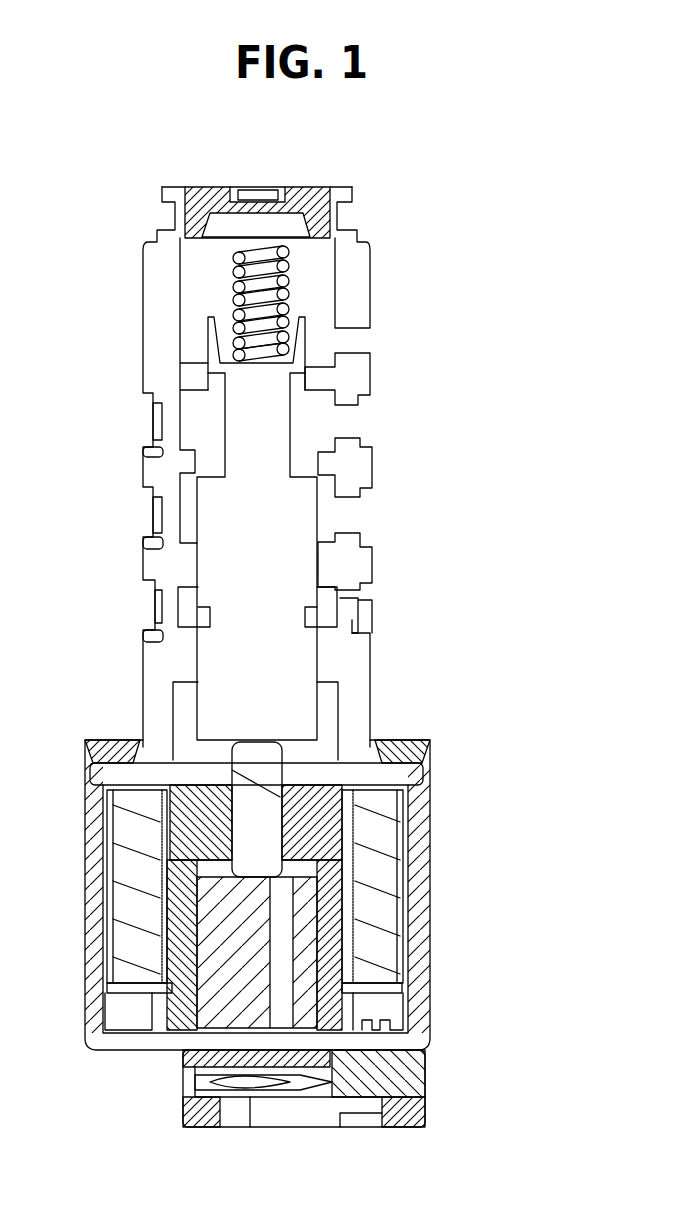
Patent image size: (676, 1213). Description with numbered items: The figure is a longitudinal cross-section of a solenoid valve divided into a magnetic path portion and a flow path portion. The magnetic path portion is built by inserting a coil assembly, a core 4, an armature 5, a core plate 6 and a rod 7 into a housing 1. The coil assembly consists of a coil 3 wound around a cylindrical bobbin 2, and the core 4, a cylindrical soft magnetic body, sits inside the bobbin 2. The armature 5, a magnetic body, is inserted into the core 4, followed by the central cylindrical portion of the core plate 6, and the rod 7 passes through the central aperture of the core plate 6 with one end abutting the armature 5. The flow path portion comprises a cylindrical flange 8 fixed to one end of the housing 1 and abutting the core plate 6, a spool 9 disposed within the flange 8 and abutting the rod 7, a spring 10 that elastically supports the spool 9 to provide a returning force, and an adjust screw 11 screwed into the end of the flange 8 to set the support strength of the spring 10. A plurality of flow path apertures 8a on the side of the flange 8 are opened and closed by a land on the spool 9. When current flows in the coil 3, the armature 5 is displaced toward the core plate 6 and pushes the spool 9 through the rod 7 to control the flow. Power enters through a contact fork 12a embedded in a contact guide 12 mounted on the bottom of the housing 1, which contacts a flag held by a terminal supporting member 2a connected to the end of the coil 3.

The housing 1 is at (418, 832).
The bobbin 2 is at (357, 907).
The terminal supporting member 2a is at (385, 1007).
The coil 3 is at (375, 945).
The core 4 is at (173, 910).
The armature 5 is at (227, 942).
The core plate 6 is at (218, 827).
The rod 7 is at (247, 765).
The flange 8 is at (165, 332).
The flow path apertures 8a is at (348, 342).
The spool 9 is at (240, 508).
The spring 10 is at (230, 262).
The adjust screw 11 is at (177, 202).
The contact guide 12 is at (297, 1127).
The contact fork 12a is at (285, 1102).